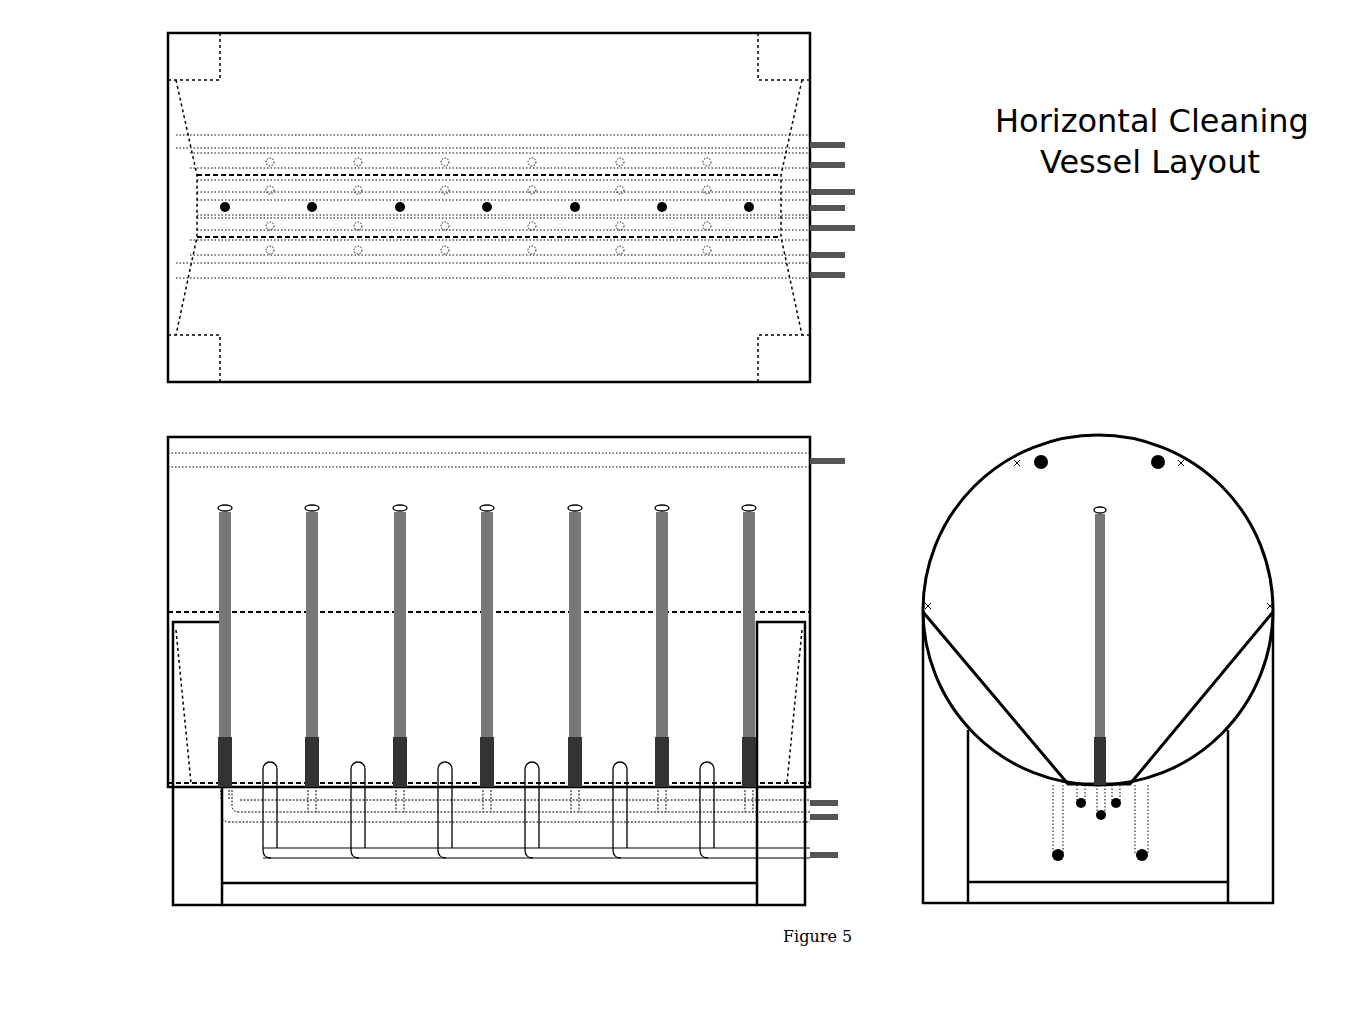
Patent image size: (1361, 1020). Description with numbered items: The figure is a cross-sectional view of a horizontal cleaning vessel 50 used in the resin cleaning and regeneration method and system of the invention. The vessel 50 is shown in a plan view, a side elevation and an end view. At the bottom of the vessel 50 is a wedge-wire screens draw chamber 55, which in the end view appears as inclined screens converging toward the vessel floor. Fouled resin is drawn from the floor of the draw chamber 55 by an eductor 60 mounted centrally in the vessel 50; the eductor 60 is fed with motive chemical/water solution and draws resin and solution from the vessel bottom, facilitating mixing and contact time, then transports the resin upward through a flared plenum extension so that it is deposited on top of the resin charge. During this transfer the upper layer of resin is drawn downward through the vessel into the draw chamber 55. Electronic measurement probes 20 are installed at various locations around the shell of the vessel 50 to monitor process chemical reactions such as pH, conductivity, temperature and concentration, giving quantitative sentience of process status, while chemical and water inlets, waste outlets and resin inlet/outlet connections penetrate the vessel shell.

The electronic measurement probes 20 is at (1014, 460).
The horizontal cleaning vessel 50 is at (1250, 518).
The wedge-wire screens draw chamber 55 is at (930, 642).
The eductor 60 is at (1108, 770).